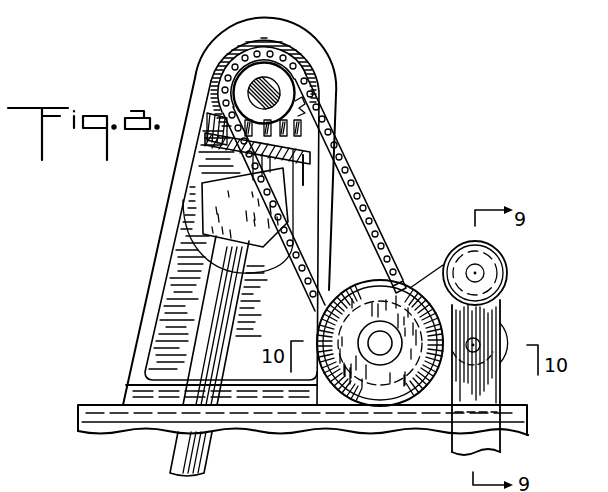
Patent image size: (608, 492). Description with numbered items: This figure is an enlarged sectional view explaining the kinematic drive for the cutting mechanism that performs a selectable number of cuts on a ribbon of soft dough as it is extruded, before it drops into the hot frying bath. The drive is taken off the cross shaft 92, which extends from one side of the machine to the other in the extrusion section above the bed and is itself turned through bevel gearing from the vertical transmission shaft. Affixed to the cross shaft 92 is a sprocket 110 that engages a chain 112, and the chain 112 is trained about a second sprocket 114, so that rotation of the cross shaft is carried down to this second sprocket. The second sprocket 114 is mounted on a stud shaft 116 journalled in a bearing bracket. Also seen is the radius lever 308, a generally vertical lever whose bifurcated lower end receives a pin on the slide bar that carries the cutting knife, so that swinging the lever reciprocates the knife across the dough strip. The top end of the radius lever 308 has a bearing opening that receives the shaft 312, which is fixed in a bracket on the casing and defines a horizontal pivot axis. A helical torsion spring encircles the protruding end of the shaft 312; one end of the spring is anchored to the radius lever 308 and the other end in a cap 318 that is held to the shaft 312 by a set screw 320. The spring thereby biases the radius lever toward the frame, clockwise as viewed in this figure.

The cross shaft 92 is at (270, 90).
The sprocket 110 is at (313, 92).
The chain 112 is at (355, 175).
The second sprocket 114 is at (406, 277).
The stud shaft 116 is at (383, 344).
The shaft 312 is at (483, 268).
The cap 318 is at (503, 277).
The radius lever 308 is at (488, 425).
The set screw 320 is at (303, 448).